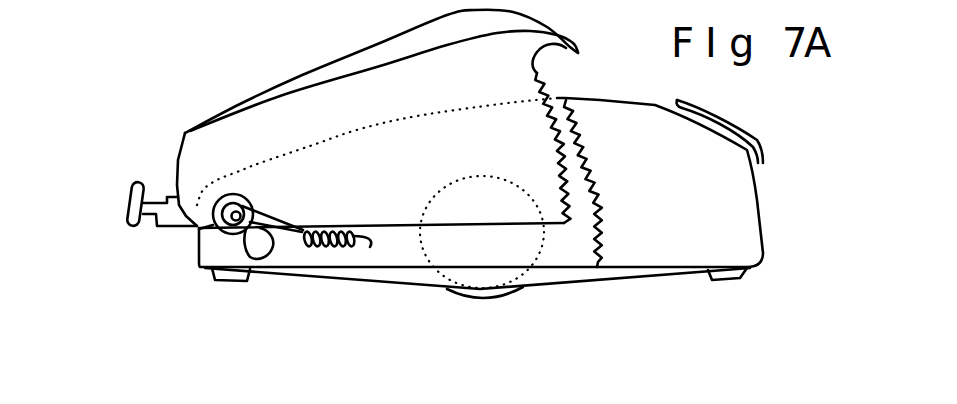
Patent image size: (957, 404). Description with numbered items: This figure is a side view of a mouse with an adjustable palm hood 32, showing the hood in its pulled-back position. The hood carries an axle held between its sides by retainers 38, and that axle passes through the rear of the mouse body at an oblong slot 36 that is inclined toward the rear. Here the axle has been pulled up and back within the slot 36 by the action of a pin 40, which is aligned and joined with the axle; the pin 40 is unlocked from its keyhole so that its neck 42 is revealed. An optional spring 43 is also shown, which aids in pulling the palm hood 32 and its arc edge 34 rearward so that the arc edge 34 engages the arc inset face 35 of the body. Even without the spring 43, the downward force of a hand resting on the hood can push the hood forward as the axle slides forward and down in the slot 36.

The palm hood 32 is at (303, 73).
The arc edge 34 is at (573, 224).
The arc inset face 35 is at (606, 207).
The slot 36 is at (259, 247).
The retainer 38 is at (212, 226).
The pin 40 is at (142, 178).
The neck 42 is at (153, 218).
The spring 43 is at (348, 252).